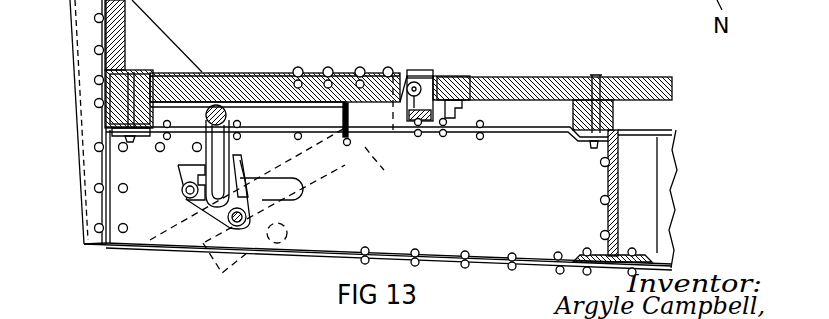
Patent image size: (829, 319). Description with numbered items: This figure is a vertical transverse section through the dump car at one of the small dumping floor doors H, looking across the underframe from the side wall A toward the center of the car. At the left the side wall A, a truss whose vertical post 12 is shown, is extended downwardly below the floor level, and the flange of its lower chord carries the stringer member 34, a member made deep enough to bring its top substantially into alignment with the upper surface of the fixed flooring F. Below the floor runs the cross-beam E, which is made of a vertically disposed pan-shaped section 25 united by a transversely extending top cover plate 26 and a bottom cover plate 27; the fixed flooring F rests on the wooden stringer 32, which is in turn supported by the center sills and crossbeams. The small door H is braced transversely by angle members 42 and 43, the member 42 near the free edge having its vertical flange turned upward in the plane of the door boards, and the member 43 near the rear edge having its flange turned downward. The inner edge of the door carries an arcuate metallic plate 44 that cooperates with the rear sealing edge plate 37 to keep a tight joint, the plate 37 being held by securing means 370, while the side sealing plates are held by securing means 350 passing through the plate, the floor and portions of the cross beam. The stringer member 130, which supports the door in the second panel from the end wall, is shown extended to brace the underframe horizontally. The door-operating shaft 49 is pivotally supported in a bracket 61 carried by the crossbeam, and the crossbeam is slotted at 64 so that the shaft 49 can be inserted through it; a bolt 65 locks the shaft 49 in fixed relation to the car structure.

The vertical post 12 is at (87, 170).
The stringer member 34 is at (133, 90).
The securing means 350 is at (127, 72).
The bracing member 42 is at (154, 123).
The shaft 49 is at (218, 140).
The bracket 61 is at (242, 164).
The bolt 65 is at (242, 176).
The slot 64 is at (289, 183).
The bracing member 43 is at (353, 150).
The metallic plate 44 is at (400, 73).
The rear edge plate 37 is at (433, 77).
The securing means 370 is at (443, 78).
The top cover plate 26 is at (492, 131).
The stringer member 130 is at (440, 128).
The crossbeam section 25 is at (389, 232).
The bottom cover plate 27 is at (488, 264).
The stringer 32 is at (600, 115).
The side wall A is at (110, 30).
The small dumping floor door H is at (247, 75).
The fixed flooring F is at (517, 85).
The cross-beam E is at (591, 199).